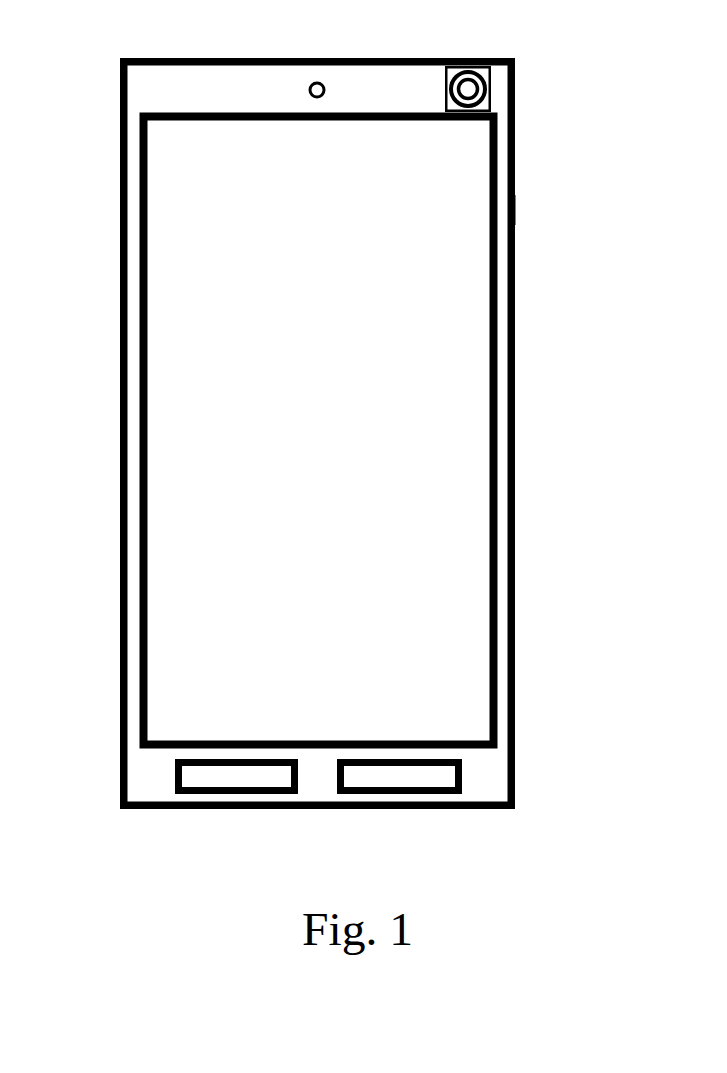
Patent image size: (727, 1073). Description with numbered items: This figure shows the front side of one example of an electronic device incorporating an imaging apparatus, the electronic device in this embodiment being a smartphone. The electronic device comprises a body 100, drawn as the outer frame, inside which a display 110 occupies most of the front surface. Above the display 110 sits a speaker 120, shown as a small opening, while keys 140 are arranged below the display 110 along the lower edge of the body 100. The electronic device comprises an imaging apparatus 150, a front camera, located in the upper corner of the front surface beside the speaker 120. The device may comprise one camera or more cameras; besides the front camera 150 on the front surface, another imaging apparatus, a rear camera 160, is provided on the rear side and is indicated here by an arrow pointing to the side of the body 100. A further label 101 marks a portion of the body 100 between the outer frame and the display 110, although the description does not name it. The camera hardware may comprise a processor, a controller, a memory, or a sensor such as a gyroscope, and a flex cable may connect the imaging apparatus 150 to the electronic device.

The body 100 is at (133, 92).
The housing 101 is at (135, 208).
The display 110 is at (168, 327).
The speaker 120 is at (311, 82).
The keys 140 is at (355, 760).
The imaging apparatus 150 is at (486, 78).
The rear camera 160 is at (536, 210).